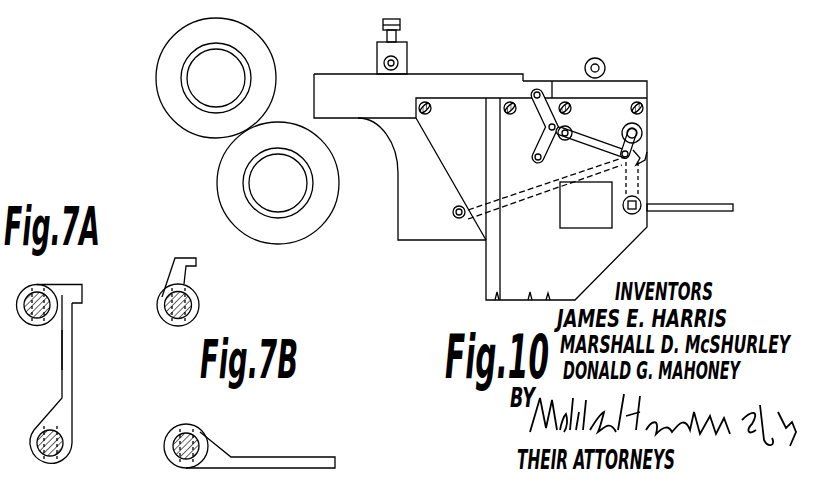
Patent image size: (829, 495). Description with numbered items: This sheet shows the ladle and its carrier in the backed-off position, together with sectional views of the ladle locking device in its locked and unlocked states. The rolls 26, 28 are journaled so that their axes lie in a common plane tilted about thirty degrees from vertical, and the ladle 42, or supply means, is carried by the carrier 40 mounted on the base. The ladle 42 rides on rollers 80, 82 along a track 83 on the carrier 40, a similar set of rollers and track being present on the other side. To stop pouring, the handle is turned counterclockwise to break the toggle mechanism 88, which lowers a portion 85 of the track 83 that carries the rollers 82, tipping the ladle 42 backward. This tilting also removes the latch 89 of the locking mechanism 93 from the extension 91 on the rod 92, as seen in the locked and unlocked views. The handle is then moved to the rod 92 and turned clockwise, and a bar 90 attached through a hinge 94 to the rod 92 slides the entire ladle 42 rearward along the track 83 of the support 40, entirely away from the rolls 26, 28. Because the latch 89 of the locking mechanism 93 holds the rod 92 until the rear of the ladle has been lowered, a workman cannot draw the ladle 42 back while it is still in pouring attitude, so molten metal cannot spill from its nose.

In FIG. 10, the roll 26 is at (158, 71).
In FIG. 10, the roll 28 is at (232, 157).
In FIG. 10, the carrier 40 is at (620, 248).
In FIG. 10, the ladle 42 is at (445, 236).
In FIG. 10, the roller 80 is at (407, 50).
In FIG. 10, the roller 82 is at (602, 62).
In FIG. 10, the track 83 is at (462, 74).
In FIG. 10, the track portion 85 is at (554, 82).
In FIG. 10, the toggle mechanism 88 is at (589, 137).
In FIG. 7A, the latch 89 is at (82, 289).
In FIG. 7B, the latch 89 is at (199, 307).
In FIG. 10, the bar 90 is at (545, 191).
In FIG. 7A, the extension 91 is at (69, 369).
In FIG. 7B, the extension 91 is at (292, 457).
In FIG. 10, the extension 91 is at (712, 212).
In FIG. 7A, the rod 92 is at (63, 440).
In FIG. 7B, the rod 92 is at (201, 440).
In FIG. 10, the rod 92 is at (643, 203).
In FIG. 7A, the locking mechanism 93 is at (46, 375).
In FIG. 10, the hinge 94 is at (645, 161).